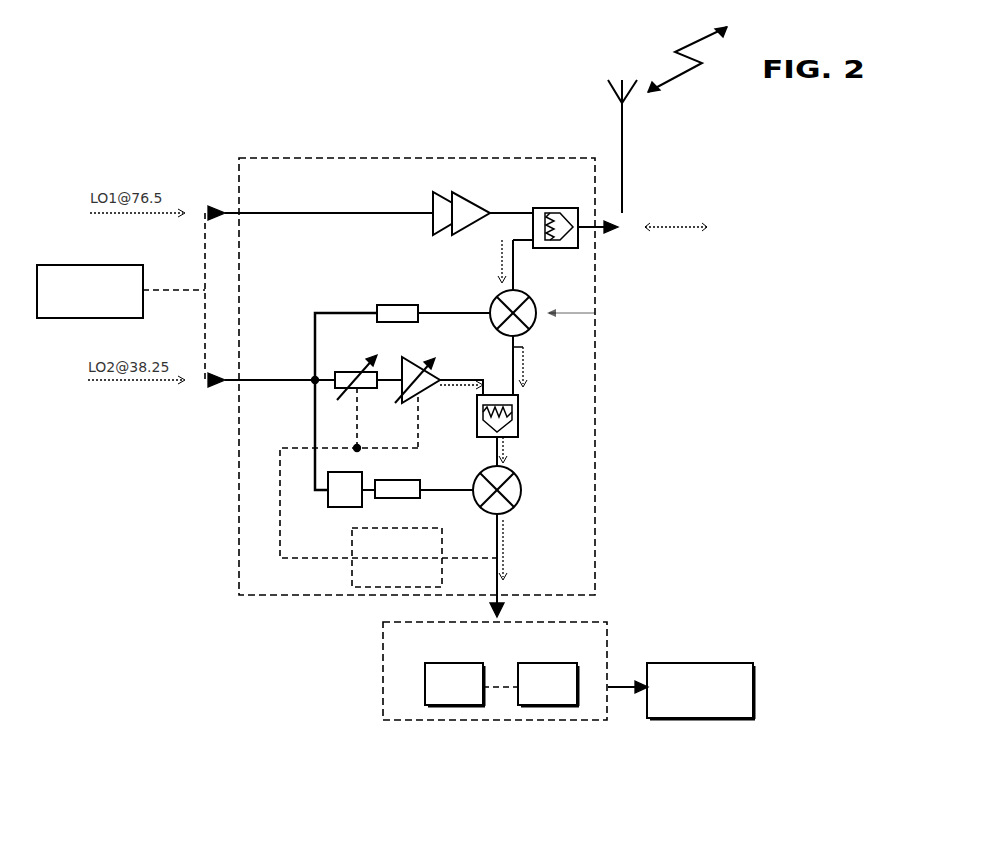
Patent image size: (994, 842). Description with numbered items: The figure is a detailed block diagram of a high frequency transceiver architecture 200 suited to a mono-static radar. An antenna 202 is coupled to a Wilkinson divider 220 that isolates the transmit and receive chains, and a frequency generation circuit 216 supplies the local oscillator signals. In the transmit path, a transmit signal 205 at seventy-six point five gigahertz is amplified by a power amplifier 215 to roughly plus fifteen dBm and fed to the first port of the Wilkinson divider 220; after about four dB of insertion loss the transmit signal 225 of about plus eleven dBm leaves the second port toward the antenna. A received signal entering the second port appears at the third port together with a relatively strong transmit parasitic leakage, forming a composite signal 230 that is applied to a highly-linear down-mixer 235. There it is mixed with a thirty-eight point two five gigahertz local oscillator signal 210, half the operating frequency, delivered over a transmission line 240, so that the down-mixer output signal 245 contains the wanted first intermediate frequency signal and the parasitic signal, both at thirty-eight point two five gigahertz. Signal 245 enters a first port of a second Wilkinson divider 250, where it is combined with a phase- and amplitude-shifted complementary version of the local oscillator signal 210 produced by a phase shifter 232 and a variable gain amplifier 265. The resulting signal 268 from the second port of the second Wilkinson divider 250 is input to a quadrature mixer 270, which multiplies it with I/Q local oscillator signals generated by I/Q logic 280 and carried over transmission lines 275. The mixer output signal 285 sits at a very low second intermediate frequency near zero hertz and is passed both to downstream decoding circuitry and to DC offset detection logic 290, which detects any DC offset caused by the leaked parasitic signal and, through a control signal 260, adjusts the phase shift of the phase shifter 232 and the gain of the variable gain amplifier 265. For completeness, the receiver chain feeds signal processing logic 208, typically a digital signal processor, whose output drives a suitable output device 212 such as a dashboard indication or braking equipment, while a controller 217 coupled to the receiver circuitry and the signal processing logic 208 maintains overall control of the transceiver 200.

The high frequency transceiver architecture 200 is at (242, 102).
The antenna 202 is at (620, 132).
The transmit signal 205 is at (227, 215).
The local oscillator signal 210 is at (225, 378).
The power amplifier 215 is at (438, 187).
The frequency generation circuit 216 is at (121, 291).
The Wilkinson divider 220 is at (535, 195).
The transmit signal output 225 is at (598, 235).
The composite signal 230 is at (512, 260).
The phase shifter 232 is at (338, 370).
The highly-linear down-mixer 235 is at (535, 338).
The transmission line 240 is at (378, 308).
The down-mixer output signal 245 is at (537, 339).
The second Wilkinson divider 250 is at (518, 405).
The control signal 260 is at (280, 533).
The variable gain amplifier 265 is at (417, 365).
The second Wilkinson divider output signal 268 is at (495, 455).
The quadrature mixer 270 is at (545, 494).
The transmission lines 275 is at (402, 498).
The I/Q logic 280 is at (345, 508).
The second intermediate frequency signal 285 is at (500, 522).
The DC offset detection logic 290 is at (352, 598).
The signal processing logic 208 is at (455, 684).
The controller 217 is at (548, 684).
The output device 212 is at (681, 691).